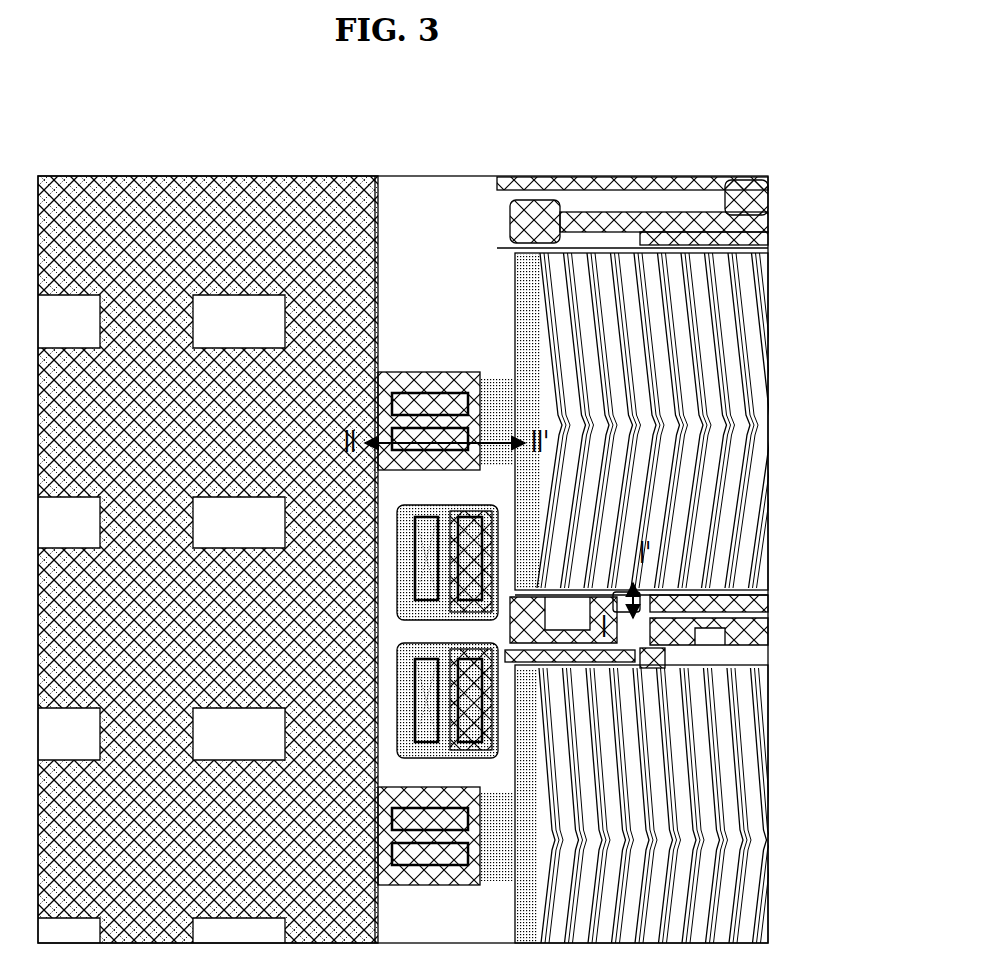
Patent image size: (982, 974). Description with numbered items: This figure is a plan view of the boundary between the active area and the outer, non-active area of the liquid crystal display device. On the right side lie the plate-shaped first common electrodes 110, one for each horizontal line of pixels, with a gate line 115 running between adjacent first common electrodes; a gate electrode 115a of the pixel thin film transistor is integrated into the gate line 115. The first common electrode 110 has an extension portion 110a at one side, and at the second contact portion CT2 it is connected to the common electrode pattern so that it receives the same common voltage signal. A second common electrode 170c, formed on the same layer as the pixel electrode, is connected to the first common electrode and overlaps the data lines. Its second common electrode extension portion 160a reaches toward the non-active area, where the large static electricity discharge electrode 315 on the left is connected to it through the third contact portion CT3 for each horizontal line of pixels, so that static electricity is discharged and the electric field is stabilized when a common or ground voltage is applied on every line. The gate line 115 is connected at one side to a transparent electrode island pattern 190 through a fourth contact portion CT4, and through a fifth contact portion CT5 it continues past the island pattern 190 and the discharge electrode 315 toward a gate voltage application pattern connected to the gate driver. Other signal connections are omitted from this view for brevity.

The static electricity discharge electrode 315 is at (232, 176).
The second common electrode extension portion 160a is at (480, 378).
The transparent electrode island pattern 190 is at (405, 177).
The second common electrode 170c is at (638, 182).
The gate line 115 is at (703, 212).
The gate electrode 115a is at (750, 180).
The first common electrode 110 is at (768, 253).
The extension portion 110a is at (768, 647).
The second contact portion CT2 is at (612, 598).
The third contact portion CT3 is at (402, 452).
The fourth contact portion CT4 is at (482, 600).
The fifth contact portion CT5 is at (428, 600).